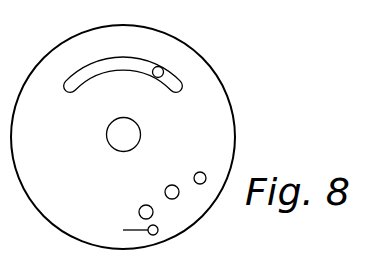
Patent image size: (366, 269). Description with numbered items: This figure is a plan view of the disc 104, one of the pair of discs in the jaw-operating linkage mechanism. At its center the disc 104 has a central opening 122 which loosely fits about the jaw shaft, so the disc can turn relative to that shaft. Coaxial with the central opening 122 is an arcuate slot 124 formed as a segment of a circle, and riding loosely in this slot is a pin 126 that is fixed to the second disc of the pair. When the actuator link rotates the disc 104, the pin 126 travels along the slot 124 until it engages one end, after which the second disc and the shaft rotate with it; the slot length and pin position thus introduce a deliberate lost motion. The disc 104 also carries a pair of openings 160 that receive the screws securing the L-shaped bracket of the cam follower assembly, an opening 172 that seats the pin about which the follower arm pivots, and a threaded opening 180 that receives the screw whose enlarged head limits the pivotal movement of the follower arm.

The disc 104 is at (219, 82).
The central opening 122 is at (139, 132).
The arcuate slot 124 is at (87, 78).
The pin 126 is at (162, 68).
The openings 160 is at (140, 216).
The opening 172 is at (213, 163).
The opening 180 is at (171, 185).